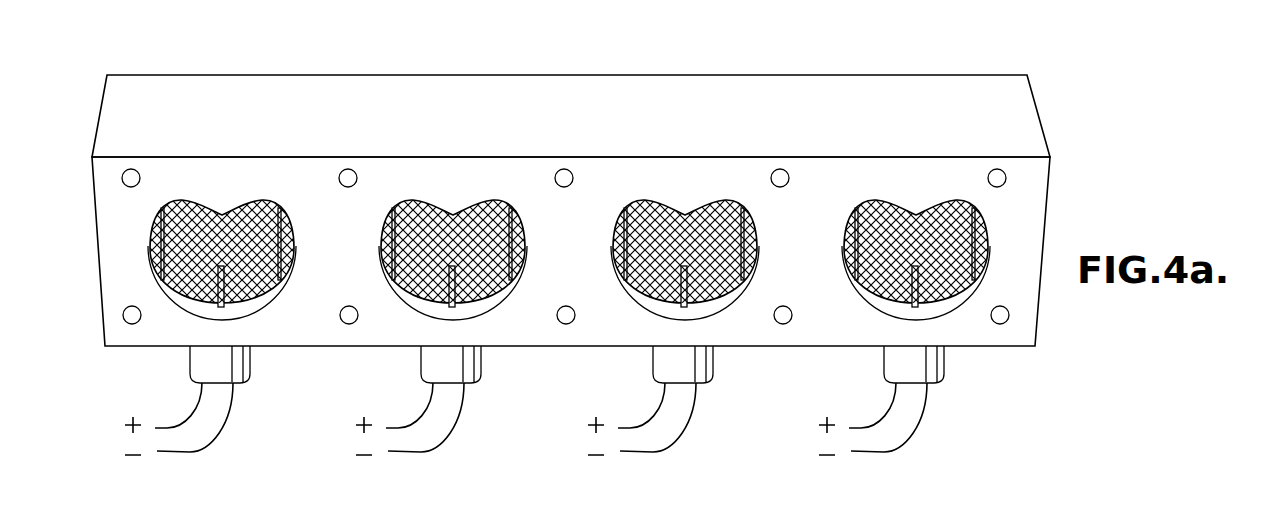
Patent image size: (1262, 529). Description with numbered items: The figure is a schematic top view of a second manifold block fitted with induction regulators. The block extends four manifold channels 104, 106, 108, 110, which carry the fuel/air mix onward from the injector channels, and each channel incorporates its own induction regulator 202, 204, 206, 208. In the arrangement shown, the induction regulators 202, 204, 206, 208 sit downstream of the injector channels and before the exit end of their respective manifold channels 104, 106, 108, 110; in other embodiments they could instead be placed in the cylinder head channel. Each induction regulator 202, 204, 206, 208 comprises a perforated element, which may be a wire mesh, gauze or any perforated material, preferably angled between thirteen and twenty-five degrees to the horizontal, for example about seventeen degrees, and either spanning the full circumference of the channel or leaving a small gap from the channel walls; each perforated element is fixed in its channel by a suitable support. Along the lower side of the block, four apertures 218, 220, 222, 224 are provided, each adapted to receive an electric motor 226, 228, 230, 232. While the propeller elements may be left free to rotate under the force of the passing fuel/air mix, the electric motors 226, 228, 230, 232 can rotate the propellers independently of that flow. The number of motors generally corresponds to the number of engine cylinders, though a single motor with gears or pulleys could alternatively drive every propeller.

The manifold channel 104 is at (187, 203).
The manifold channel 106 is at (405, 200).
The manifold channel 108 is at (632, 200).
The manifold channel 110 is at (855, 200).
The induction regulator 202 is at (200, 268).
The induction regulator 204 is at (431, 268).
The induction regulator 206 is at (663, 268).
The induction regulator 208 is at (894, 268).
The aperture 218 is at (228, 369).
The aperture 220 is at (459, 369).
The aperture 222 is at (691, 369).
The aperture 224 is at (940, 363).
The electric motor 226 is at (195, 435).
The electric motor 228 is at (426, 435).
The electric motor 230 is at (658, 435).
The electric motor 232 is at (883, 438).